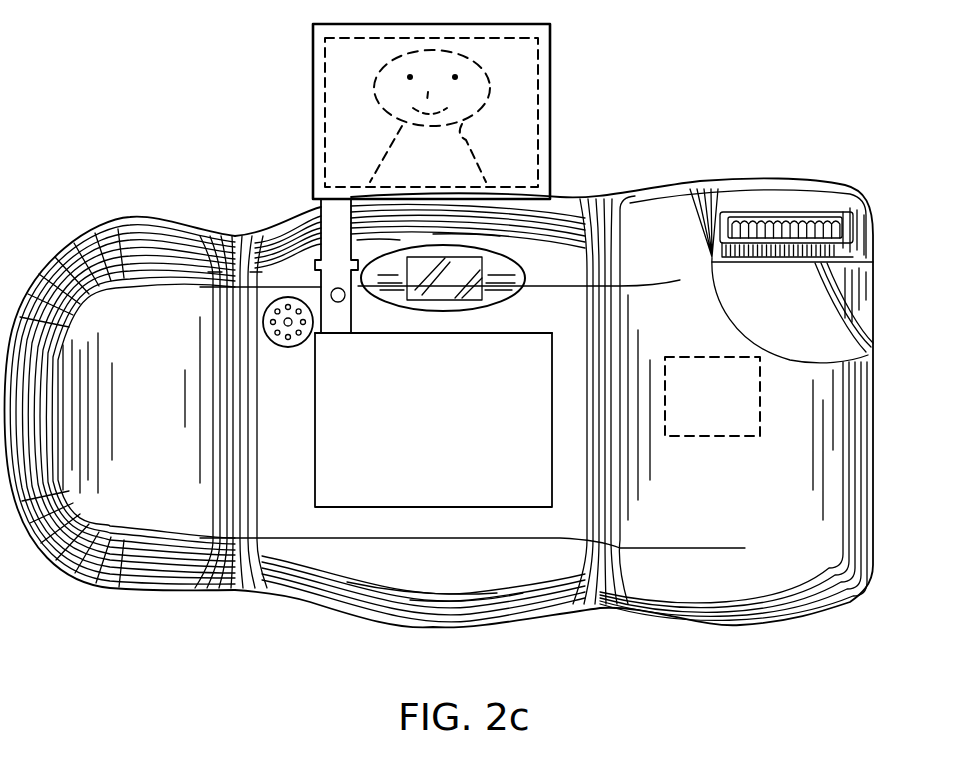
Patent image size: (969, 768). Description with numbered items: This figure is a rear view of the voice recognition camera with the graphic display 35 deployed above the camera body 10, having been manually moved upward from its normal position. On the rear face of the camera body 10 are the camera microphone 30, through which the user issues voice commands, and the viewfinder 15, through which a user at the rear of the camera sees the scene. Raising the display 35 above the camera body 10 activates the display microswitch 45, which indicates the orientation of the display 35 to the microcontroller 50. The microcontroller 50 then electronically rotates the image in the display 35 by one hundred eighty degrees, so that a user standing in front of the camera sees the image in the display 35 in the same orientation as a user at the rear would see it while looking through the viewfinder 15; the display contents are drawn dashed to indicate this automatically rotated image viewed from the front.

The camera body 10 is at (672, 178).
The viewfinder 15 is at (463, 272).
The camera microphone 30 is at (287, 347).
The graphic display 35 is at (553, 112).
The display microswitch 45 is at (331, 293).
The microcontroller 50 is at (742, 437).